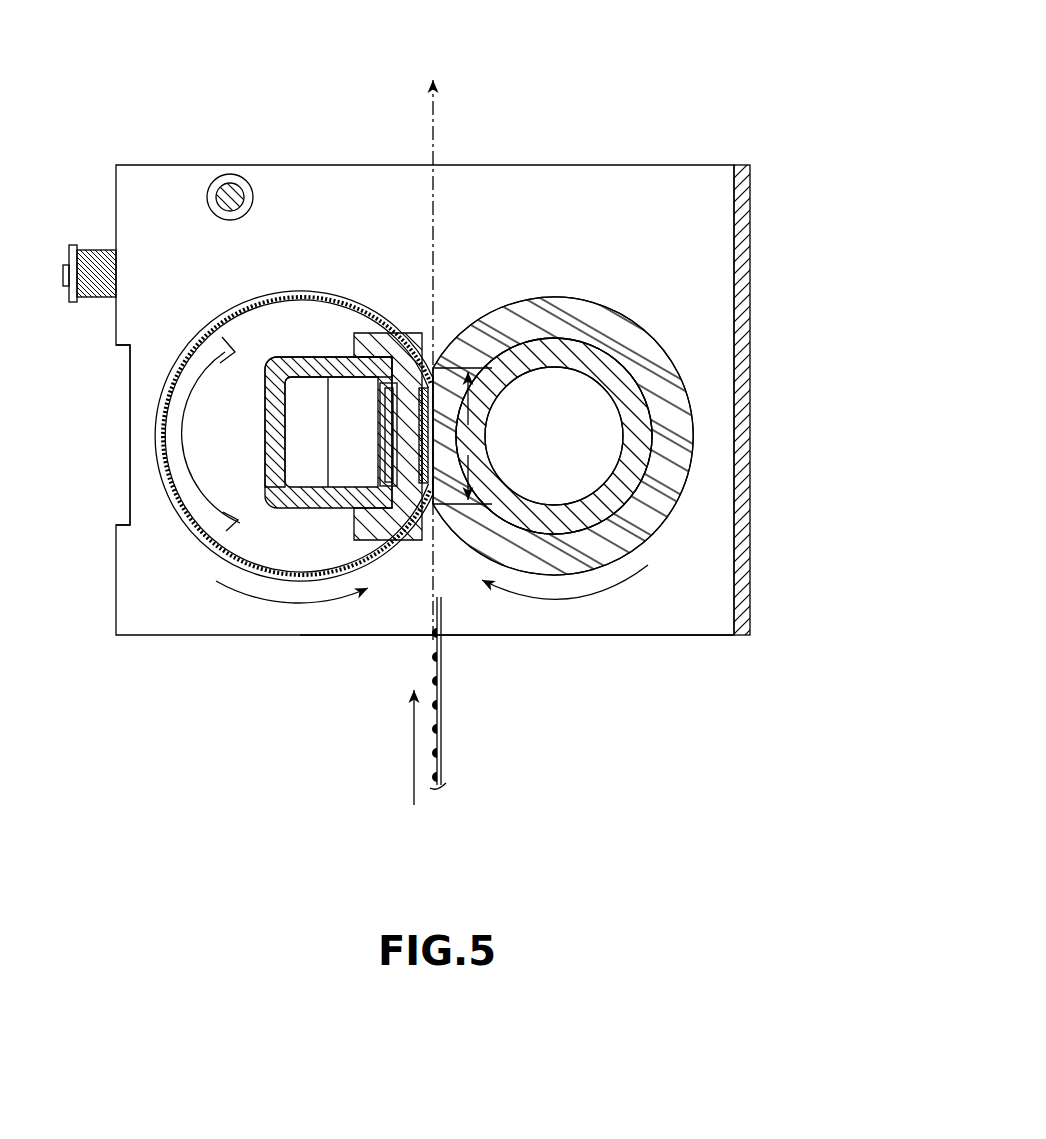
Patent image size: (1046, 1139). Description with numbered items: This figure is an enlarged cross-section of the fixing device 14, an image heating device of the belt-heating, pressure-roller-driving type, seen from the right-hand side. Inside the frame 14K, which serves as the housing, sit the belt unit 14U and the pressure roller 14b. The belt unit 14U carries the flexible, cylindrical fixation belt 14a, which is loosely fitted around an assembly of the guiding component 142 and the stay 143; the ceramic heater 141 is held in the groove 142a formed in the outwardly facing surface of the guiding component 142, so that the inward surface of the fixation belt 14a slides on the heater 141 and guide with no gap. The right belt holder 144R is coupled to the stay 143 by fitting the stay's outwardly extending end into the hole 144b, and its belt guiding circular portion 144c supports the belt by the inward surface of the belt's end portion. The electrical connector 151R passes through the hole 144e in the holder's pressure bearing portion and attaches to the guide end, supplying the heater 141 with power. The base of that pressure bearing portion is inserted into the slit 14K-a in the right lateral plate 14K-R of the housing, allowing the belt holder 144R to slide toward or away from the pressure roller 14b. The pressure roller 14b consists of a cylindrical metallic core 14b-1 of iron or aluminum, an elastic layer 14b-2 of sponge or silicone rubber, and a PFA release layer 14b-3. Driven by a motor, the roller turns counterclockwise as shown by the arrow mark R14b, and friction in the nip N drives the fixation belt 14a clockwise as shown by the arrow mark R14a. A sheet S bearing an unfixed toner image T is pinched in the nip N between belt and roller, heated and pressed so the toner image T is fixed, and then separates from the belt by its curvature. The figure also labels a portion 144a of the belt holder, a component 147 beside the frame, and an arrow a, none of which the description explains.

The fixing device 14 is at (337, 653).
The belt unit 14U is at (190, 568).
The frame 14K is at (758, 365).
The slit 14K-a is at (156, 357).
The right lateral plate 14K-R is at (563, 637).
The fixation belt 14a is at (259, 566).
The pressure roller 14b is at (596, 288).
The metallic core 14b-1 is at (541, 357).
The elastic layer 14b-2 is at (597, 315).
The release layer 14b-3 is at (640, 327).
The ceramic heater 141 is at (421, 437).
The guiding component 142 is at (368, 523).
The groove 142a is at (425, 468).
The stay 143 is at (293, 509).
The drum outer surface 144a is at (276, 290).
The hole 144b is at (360, 386).
The belt guiding circular portion 144c is at (186, 430).
The hole 144e is at (333, 380).
The right belt holder 144R is at (294, 452).
The fastening screw 147 is at (98, 258).
The electrical connector 151R is at (393, 408).
The arrow mark R14a is at (318, 605).
The arrow mark R14b is at (558, 597).
The nip N is at (462, 436).
The sheet S is at (441, 725).
The toner image T is at (433, 755).
The sheet conveying direction a is at (412, 732).